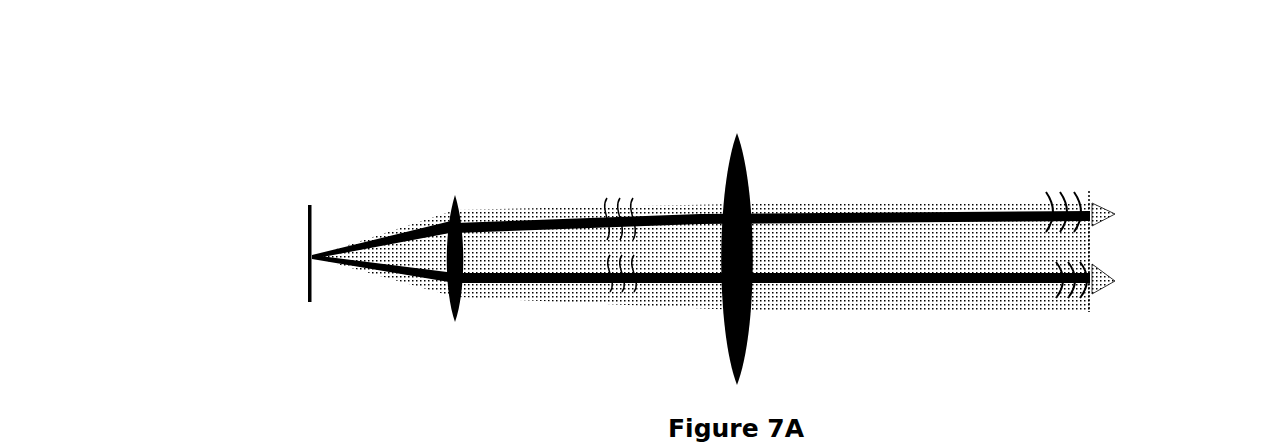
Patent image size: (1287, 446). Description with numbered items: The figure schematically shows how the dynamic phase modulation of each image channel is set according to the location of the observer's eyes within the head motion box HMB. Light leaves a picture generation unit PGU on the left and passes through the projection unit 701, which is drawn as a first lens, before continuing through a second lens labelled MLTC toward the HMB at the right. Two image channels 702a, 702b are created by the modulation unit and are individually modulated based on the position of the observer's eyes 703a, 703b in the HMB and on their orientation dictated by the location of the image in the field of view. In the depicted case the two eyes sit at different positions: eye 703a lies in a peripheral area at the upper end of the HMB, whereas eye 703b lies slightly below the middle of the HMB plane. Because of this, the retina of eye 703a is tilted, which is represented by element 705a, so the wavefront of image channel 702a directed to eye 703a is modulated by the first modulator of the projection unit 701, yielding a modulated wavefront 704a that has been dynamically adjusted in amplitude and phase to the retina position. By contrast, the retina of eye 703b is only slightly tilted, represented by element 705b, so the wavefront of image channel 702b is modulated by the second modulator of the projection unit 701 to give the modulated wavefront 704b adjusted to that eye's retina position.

The projection unit 701 is at (452, 194).
The first image channel 702a is at (429, 227).
The second image channel 702b is at (423, 274).
The observer's first eye 703a is at (1117, 214).
The observer's second eye 703b is at (1117, 281).
The modulated wavefront of first image channel 704a is at (625, 193).
The modulated wavefront of second image channel 704b is at (622, 277).
The tilted retina of first eye 705a is at (1056, 179).
The slightly tilted retina of second eye 705b is at (1072, 305).
The picture generation unit PGU is at (306, 311).
The multi-lens transfer component / lens L2 MLTC is at (734, 133).
The head motion box HMB is at (1086, 191).